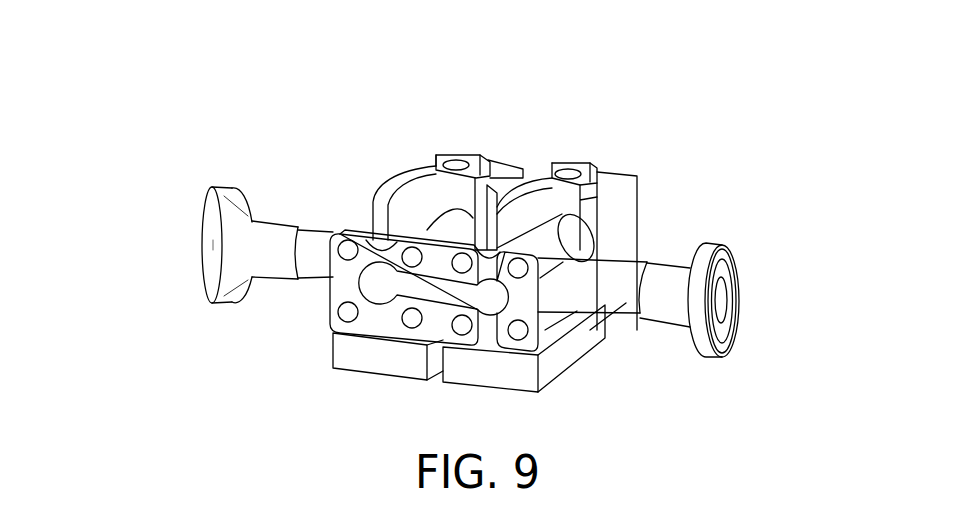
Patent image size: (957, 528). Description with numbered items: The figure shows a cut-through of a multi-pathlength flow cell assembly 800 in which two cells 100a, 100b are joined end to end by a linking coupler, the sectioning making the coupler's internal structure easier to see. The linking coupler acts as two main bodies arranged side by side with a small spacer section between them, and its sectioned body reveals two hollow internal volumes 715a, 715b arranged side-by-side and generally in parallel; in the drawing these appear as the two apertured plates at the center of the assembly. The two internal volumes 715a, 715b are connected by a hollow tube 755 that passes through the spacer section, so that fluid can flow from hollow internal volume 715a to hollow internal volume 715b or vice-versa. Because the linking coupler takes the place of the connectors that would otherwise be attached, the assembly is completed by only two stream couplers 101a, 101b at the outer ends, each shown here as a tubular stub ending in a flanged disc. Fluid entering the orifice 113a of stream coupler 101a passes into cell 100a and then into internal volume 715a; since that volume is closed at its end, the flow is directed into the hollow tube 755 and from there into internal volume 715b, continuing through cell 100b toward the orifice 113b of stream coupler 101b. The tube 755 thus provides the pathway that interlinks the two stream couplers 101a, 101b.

The coupling assembly 800 is at (425, 110).
The cell 100a is at (607, 167).
The cell 100b is at (497, 155).
The stream coupler 101a is at (712, 247).
The stream coupler 101b is at (233, 190).
The orifice 113a is at (722, 297).
The orifice 113b is at (201, 248).
The hollow internal volume 715a is at (490, 320).
The hollow internal volume 715b is at (328, 303).
The hollow tube 755 is at (428, 295).